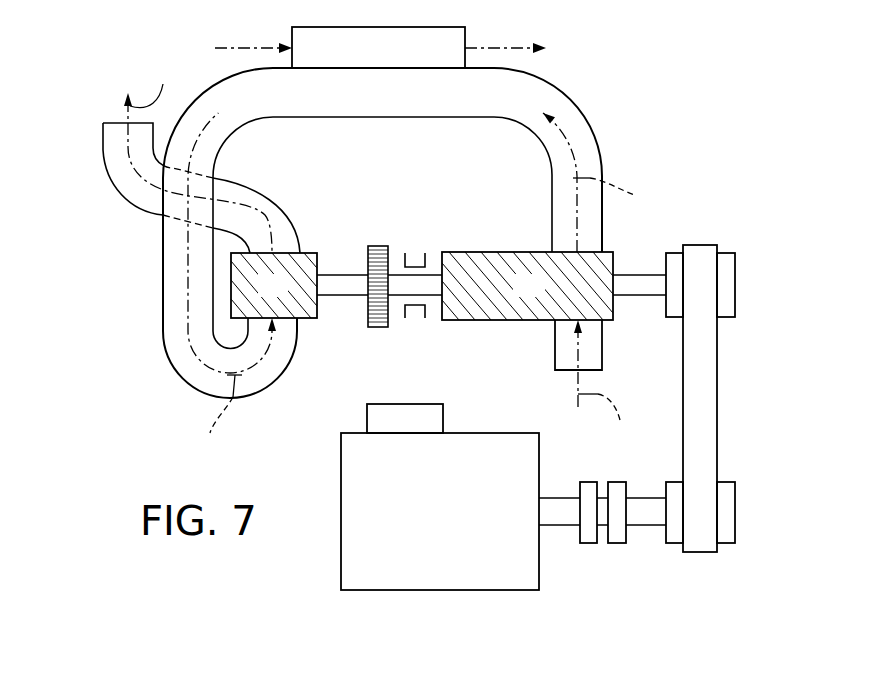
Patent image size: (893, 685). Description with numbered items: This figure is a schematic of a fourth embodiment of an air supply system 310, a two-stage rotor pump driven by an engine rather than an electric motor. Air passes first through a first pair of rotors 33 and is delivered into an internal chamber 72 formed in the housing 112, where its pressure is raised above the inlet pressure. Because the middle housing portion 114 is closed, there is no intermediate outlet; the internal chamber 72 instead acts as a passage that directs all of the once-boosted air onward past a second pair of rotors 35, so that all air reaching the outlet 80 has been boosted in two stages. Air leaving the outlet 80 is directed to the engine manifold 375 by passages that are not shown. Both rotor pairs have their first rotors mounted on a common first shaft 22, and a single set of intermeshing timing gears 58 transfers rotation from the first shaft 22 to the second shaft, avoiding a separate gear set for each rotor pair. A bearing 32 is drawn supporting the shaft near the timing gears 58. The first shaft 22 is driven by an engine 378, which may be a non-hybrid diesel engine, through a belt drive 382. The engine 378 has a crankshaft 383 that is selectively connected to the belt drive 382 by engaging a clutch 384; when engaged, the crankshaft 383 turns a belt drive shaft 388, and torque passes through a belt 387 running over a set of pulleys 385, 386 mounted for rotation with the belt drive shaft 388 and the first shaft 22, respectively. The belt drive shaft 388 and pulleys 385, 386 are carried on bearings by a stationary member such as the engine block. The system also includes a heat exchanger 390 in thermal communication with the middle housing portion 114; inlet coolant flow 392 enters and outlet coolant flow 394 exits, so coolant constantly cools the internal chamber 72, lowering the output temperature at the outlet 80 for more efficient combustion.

The air supply system 310 is at (185, 48).
The internal chamber 72 is at (391, 102).
The housing 112 is at (577, 114).
The middle housing portion 114 is at (593, 141).
The heat exchanger 390 is at (397, 58).
The inlet coolant flow 392 is at (252, 48).
The outlet coolant flow 394 is at (500, 47).
The outlet 80 is at (117, 123).
The second pair of rotors 35 is at (286, 295).
The first pair of rotors 33 is at (542, 295).
The timing gears 58 is at (362, 331).
The bearing 32 is at (407, 308).
The first shaft 22 is at (637, 274).
The belt drive 382 is at (770, 454).
The pulley 386 is at (736, 285).
The belt 387 is at (720, 397).
The pulley 385 is at (736, 512).
The belt drive shaft 388 is at (647, 528).
The crankshaft 383 is at (563, 528).
The clutch 384 is at (616, 553).
The engine 378 is at (443, 592).
The engine manifold 375 is at (443, 421).